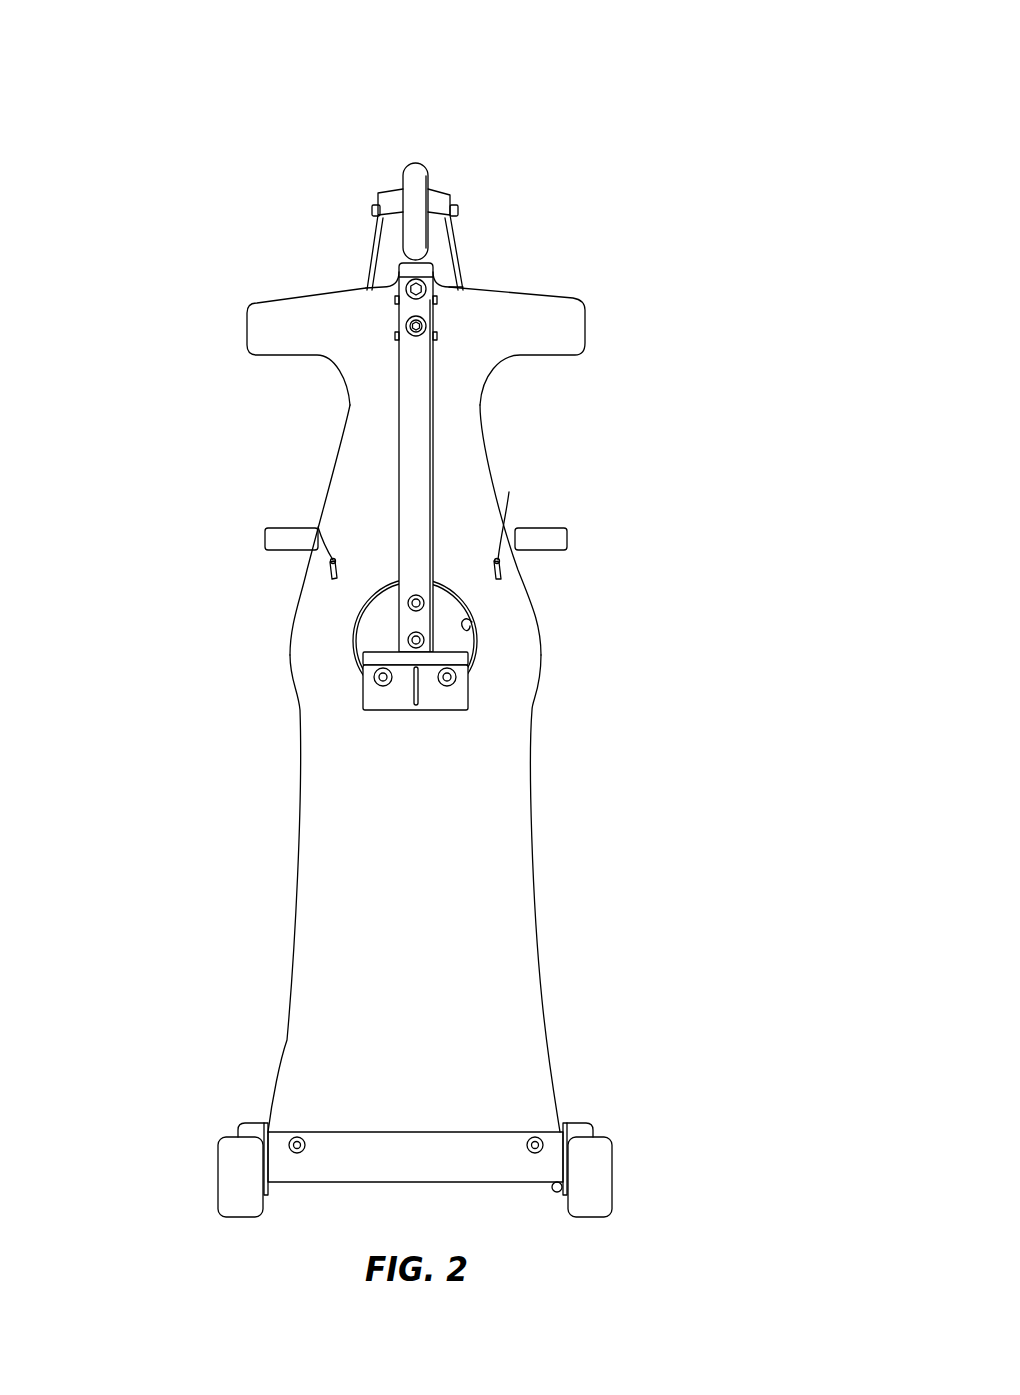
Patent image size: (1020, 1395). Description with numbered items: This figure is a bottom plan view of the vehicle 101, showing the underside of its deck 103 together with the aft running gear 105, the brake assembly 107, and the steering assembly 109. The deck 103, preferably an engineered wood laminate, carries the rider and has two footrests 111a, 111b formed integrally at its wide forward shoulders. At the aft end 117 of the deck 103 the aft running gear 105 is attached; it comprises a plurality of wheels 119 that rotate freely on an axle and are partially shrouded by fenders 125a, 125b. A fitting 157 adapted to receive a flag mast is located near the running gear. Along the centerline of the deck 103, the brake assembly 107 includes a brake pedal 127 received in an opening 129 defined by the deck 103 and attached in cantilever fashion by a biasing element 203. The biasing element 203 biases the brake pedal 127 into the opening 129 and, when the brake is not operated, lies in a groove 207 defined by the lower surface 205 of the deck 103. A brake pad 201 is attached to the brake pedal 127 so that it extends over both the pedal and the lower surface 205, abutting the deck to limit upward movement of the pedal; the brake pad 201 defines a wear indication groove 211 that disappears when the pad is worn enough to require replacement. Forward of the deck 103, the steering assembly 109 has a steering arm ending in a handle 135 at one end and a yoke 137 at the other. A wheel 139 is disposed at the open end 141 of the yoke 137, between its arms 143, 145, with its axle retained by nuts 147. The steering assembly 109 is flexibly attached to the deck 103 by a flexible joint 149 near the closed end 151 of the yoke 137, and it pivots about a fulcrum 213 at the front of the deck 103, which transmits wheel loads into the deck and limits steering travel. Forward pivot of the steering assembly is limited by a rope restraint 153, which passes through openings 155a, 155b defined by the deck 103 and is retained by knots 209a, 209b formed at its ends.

The vehicle 101 is at (625, 100).
The deck 103 is at (487, 493).
The aft running gear 105 is at (365, 1195).
The brake assembly 107 is at (483, 645).
The steering assembly 109 is at (251, 538).
The footrest 111a is at (575, 328).
The footrest 111b is at (257, 333).
The aft end 117 is at (270, 1128).
The wheels 119 is at (232, 1176).
The fender 125a is at (593, 1127).
The fender 125b is at (235, 1128).
The brake pedal 127 is at (373, 622).
The opening 129 is at (473, 625).
The handle 135 is at (558, 537).
The yoke 137 is at (455, 247).
The wheel 139 is at (413, 176).
The open end 141 is at (430, 193).
The arm 143 is at (442, 200).
The arm 145 is at (392, 197).
The nuts 147 is at (372, 212).
The flexible joint 149 is at (392, 262).
The closed end 151 is at (457, 255).
The restraint 153 is at (472, 622).
The opening 155a is at (503, 563).
The opening 155b is at (331, 561).
The fitting 157 is at (552, 1190).
The brake pad 201 is at (375, 700).
The biasing element 203 is at (413, 433).
The lower surface 205 is at (516, 966).
The groove 207 is at (433, 402).
The knot 209a is at (509, 492).
The knot 209b is at (318, 527).
The wear indication groove 211 is at (418, 687).
The fulcrum 213 is at (395, 273).